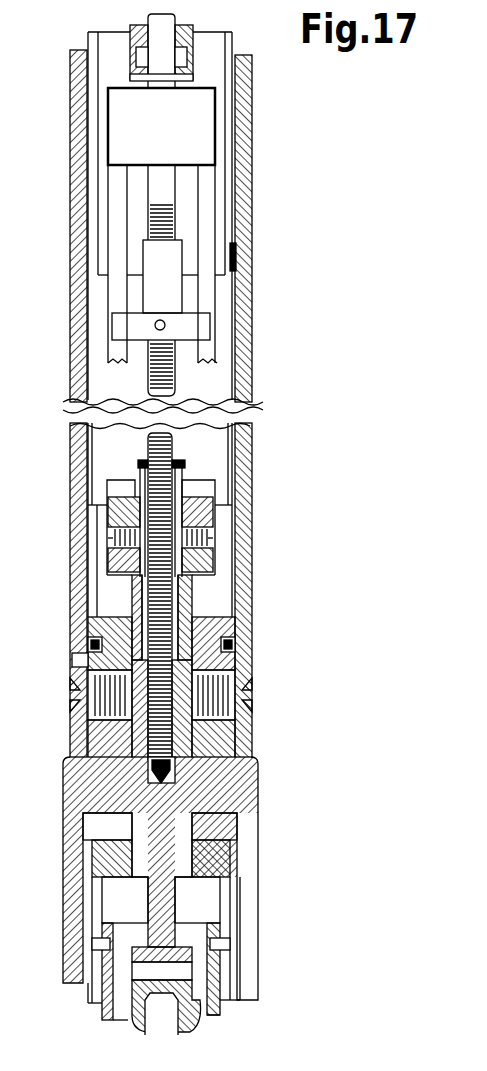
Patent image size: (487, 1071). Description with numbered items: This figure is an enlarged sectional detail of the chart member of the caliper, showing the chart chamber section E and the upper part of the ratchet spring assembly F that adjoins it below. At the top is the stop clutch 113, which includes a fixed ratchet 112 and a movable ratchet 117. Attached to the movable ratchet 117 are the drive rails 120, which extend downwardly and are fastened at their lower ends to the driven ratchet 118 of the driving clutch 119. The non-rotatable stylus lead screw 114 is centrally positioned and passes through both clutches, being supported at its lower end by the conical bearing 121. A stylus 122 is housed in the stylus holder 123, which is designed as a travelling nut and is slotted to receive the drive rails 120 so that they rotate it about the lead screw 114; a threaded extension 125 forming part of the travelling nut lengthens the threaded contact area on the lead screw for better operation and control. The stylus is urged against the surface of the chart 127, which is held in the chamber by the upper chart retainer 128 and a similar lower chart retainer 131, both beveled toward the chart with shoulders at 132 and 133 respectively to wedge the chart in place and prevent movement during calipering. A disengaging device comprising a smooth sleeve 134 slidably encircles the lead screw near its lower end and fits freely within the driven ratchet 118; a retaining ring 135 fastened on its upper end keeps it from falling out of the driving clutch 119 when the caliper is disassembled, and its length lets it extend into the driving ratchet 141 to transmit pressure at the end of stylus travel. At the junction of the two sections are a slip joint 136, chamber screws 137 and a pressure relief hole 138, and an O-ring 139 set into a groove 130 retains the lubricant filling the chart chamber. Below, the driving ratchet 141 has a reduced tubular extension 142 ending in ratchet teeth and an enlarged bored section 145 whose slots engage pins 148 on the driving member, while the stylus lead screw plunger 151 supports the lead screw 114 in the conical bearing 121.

The fixed ratchet 112 is at (193, 58).
The stop clutch 113 is at (137, 61).
The movable ratchet 117 is at (192, 73).
The drive rails 120 is at (205, 193).
The upper chart retainer 128 is at (237, 227).
The shoulder 132 is at (234, 258).
The threaded extension 125 is at (163, 295).
The stylus holder 123 is at (203, 320).
The stylus 122 is at (166, 325).
The stylus lead screw 114 is at (173, 388).
The sleeve 134 is at (137, 473).
The retaining ring 135 is at (188, 460).
The chart 127 is at (240, 463).
The shoulder 133 is at (233, 510).
The lower chart retainer 131 is at (238, 557).
The driven ratchet 118 is at (192, 613).
The driving clutch 119 is at (195, 623).
The groove 130 is at (237, 642).
The O-ring 139 is at (86, 641).
The pressure relief hole 138 is at (73, 657).
The chamber screws 137 is at (243, 697).
The slip joint 136 is at (235, 671).
The conical bearing 121 is at (168, 768).
The reduced tubular extension 142 is at (190, 820).
The driving ratchet 141 is at (223, 848).
The bored section 145 is at (213, 893).
The stylus lead screw plunger 151 is at (175, 903).
The pins 148 is at (228, 942).
The chart chamber section E is at (69, 331).
The ratchet spring assembly F is at (62, 860).